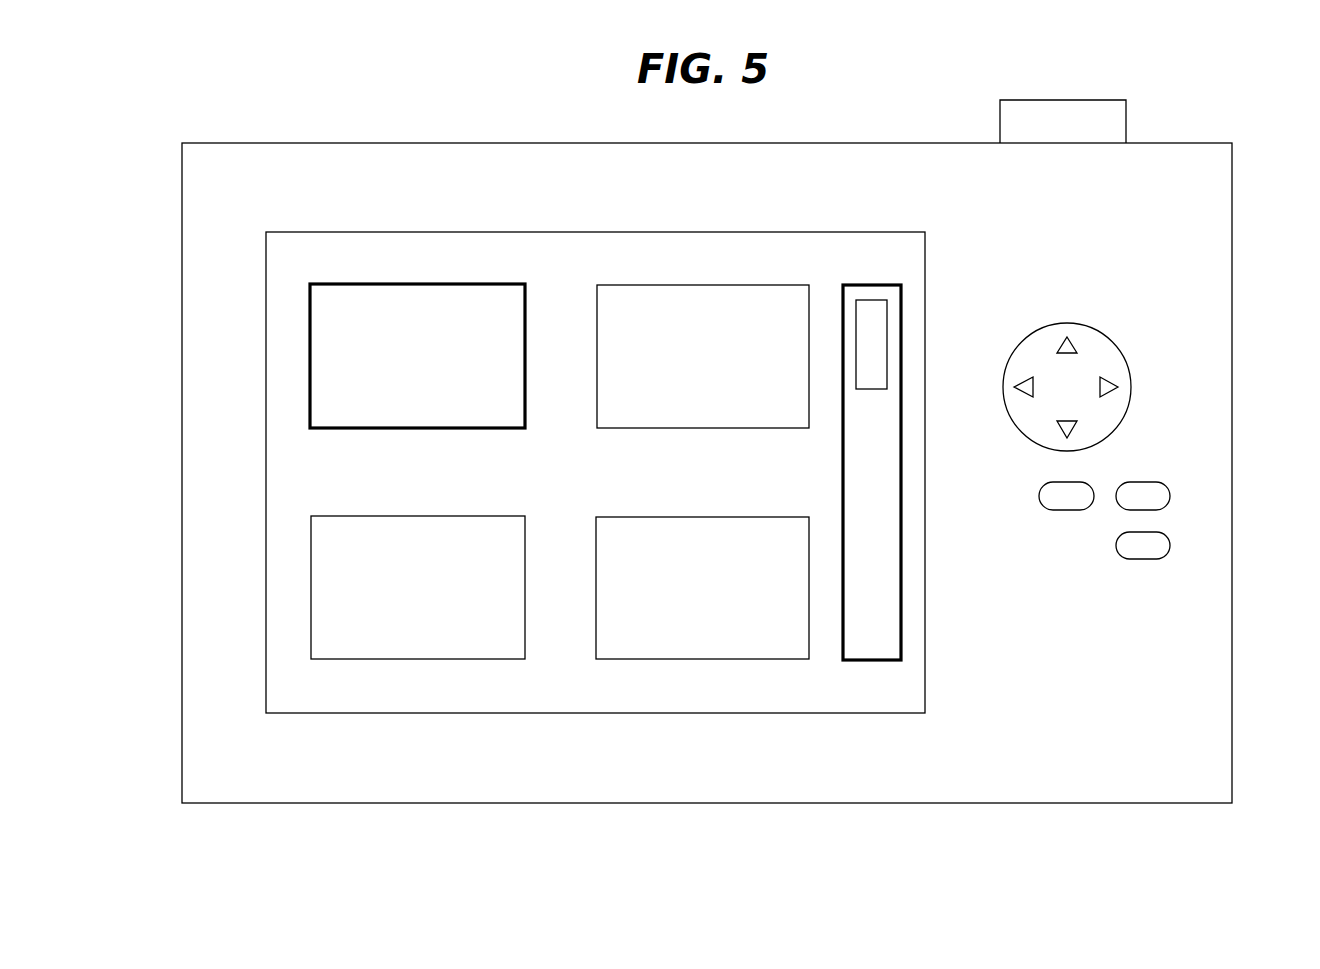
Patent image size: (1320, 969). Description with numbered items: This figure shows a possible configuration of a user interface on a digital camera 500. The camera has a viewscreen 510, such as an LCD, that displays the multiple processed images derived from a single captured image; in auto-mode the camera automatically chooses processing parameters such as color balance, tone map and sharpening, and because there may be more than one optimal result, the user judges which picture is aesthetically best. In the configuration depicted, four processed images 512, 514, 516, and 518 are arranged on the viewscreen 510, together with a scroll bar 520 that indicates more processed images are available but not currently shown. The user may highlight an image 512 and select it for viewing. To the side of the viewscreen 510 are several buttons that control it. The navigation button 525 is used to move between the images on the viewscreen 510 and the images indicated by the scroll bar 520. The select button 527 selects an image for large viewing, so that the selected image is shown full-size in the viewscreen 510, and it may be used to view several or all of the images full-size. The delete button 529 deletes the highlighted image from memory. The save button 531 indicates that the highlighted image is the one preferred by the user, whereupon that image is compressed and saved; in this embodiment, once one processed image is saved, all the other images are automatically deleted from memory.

The digital camera 500 is at (1214, 102).
The viewscreen 510 is at (265, 401).
The processed image 512 is at (418, 284).
The processed image 514 is at (703, 285).
The processed image 516 is at (417, 659).
The processed image 518 is at (703, 659).
The scroll bar 520 is at (899, 510).
The navigation button 525 is at (1133, 385).
The select button 527 is at (1067, 510).
The delete button 529 is at (1170, 495).
The save button 531 is at (1170, 545).